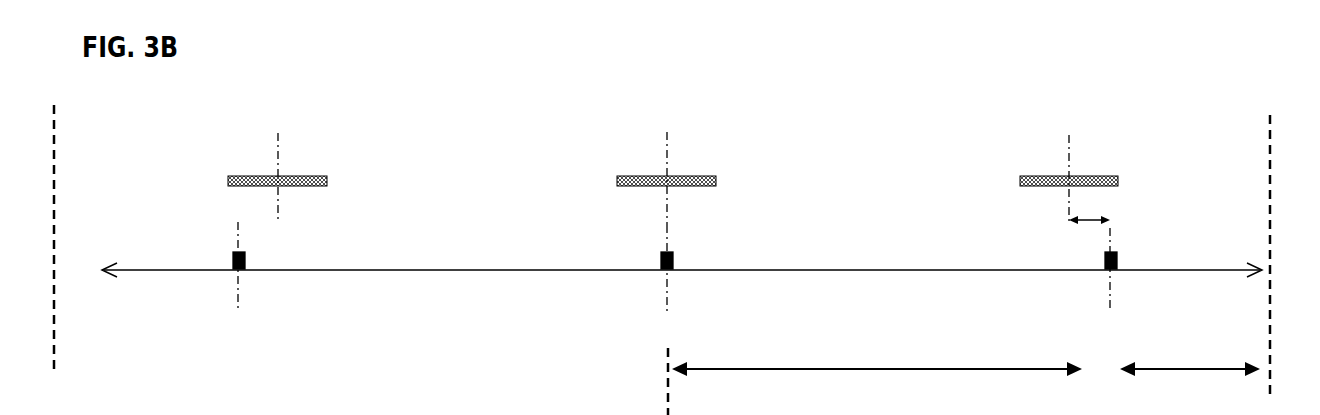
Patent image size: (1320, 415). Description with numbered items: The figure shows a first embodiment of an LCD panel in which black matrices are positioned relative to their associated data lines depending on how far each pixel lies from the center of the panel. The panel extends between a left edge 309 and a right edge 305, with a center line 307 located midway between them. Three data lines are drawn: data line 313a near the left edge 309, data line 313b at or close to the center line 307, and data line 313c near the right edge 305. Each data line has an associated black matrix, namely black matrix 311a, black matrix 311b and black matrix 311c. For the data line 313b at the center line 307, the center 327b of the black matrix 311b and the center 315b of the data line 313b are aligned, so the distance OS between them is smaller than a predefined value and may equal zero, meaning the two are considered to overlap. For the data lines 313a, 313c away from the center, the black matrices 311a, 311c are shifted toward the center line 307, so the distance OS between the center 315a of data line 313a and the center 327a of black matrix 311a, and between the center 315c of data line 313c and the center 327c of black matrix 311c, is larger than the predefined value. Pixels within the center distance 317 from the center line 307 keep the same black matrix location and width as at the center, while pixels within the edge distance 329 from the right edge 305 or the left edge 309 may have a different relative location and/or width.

The right edge 305 is at (1268, 143).
The center line 307 is at (641, 381).
The left edge 309 is at (54, 126).
The black matrix 311a is at (228, 181).
The black matrix 311b is at (617, 181).
The black matrix 311c is at (1020, 181).
The data line 313a is at (233, 262).
The data line 313b is at (661, 262).
The data line 313c is at (1105, 262).
The center of data line 315a is at (239, 293).
The center of data line 315b is at (668, 292).
The center of data line 315c is at (1111, 292).
The center of black matrix 327a is at (279, 158).
The center of black matrix 327b is at (668, 150).
The center of black matrix 327c is at (1070, 151).
The center distance 317 is at (833, 371).
The edge distance 329 is at (1160, 371).
The distance OS is at (1110, 215).